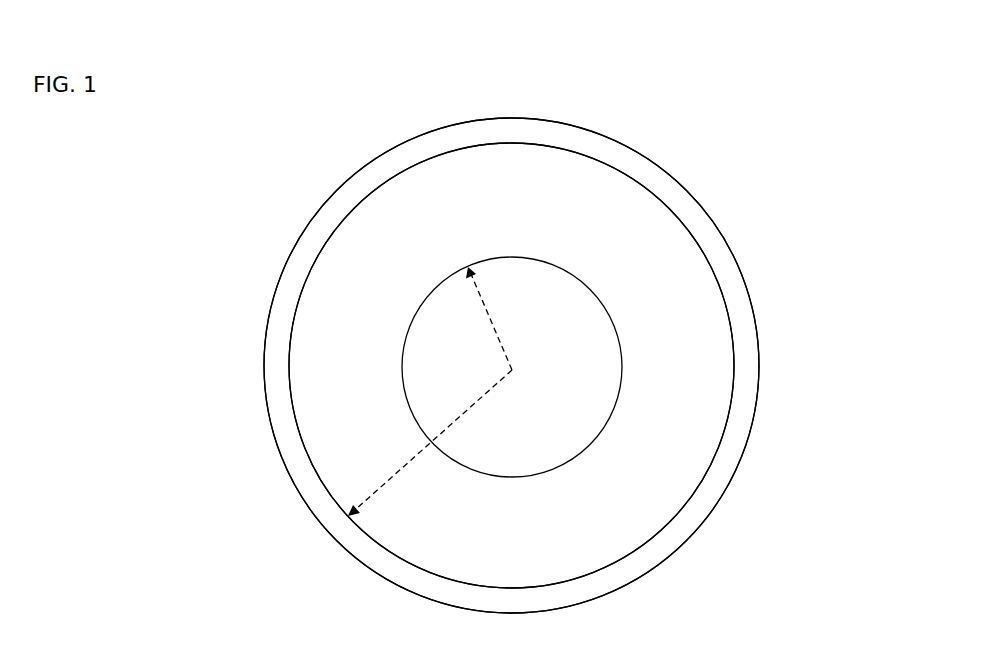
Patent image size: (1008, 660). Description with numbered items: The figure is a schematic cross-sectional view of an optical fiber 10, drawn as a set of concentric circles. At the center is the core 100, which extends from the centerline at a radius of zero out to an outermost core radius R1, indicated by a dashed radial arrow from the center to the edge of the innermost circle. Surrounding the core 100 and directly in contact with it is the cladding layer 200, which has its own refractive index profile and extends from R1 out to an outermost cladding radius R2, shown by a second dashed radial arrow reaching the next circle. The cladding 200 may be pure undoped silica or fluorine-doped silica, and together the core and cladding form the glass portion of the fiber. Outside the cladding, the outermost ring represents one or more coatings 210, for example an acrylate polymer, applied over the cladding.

The optical fiber 10 is at (233, 252).
The core 100 is at (572, 409).
The cladding layer 200 is at (647, 293).
The coating 210 is at (290, 457).
The outermost core radius R1 is at (480, 308).
The outermost cladding radius R2 is at (421, 454).